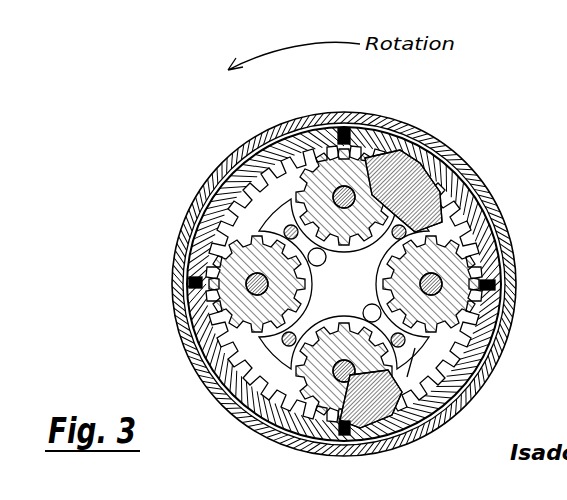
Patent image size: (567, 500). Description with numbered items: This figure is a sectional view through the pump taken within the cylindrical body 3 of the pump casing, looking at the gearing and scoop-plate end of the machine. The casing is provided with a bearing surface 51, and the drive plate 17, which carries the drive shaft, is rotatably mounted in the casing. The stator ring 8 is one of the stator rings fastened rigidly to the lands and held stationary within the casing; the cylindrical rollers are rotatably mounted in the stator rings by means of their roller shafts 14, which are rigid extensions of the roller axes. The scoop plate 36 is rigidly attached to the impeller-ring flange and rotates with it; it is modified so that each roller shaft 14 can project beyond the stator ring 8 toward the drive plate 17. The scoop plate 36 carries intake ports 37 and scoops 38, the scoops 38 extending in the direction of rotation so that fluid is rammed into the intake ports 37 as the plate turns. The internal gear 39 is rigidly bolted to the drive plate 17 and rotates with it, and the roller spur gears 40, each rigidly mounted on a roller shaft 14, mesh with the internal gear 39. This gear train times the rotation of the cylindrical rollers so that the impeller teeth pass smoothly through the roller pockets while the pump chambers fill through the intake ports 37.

The cylindrical body 3 is at (471, 182).
The stator ring 8 is at (288, 355).
The roller shaft 14 is at (349, 138).
The drive plate 17 is at (220, 393).
The scoop plate 36 is at (433, 230).
The intake port 37 is at (407, 178).
The scoop 38 is at (442, 170).
The internal gear 39 is at (458, 384).
The roller spur gear 40 is at (316, 188).
The bearing surface 51 is at (247, 148).